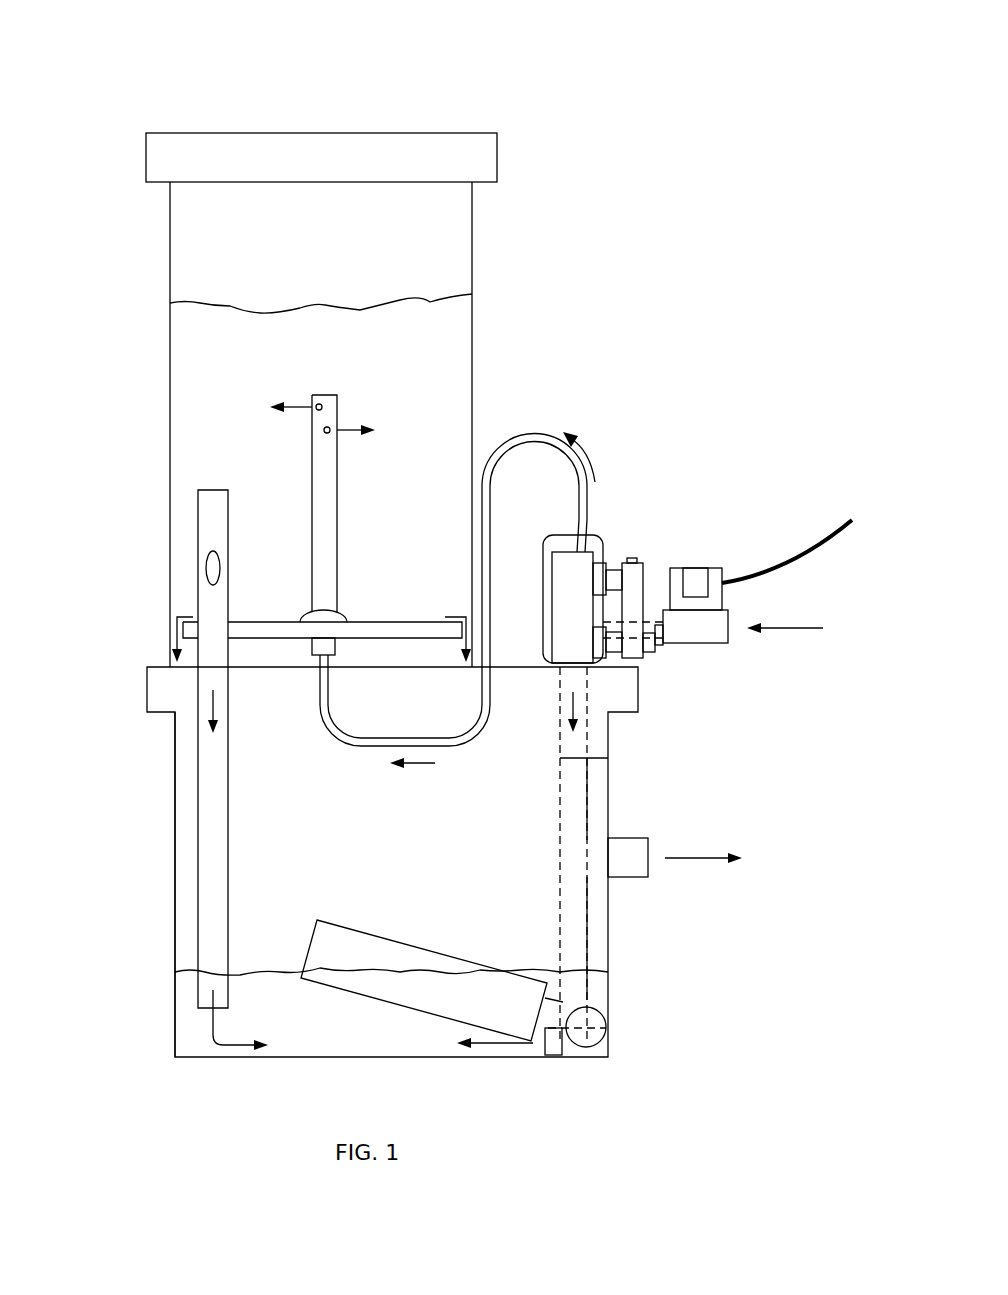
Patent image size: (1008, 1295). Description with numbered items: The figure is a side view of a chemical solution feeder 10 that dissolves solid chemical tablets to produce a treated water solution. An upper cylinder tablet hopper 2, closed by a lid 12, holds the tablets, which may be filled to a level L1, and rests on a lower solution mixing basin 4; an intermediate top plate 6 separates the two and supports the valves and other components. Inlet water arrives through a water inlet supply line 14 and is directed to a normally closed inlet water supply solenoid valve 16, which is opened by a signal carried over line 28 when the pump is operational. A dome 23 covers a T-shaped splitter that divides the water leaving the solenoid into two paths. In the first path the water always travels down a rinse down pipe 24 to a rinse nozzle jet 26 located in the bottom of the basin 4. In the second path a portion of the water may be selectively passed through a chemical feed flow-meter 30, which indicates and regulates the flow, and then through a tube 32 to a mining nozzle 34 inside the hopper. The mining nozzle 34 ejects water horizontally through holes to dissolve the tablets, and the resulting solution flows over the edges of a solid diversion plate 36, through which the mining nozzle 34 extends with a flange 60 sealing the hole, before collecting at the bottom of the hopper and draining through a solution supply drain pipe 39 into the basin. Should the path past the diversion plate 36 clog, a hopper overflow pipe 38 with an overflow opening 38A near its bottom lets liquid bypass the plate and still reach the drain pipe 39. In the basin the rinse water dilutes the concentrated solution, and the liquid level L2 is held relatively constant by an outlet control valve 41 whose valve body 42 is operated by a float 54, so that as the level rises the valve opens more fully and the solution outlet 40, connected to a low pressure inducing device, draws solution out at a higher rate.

The feeder 10 is at (503, 66).
The lid 12 is at (146, 150).
The tablet hopper 2 is at (472, 248).
The tablet level L1 is at (373, 303).
The mining nozzle 34 is at (320, 395).
The tube 32 is at (530, 432).
The hopper overflow pipe 38 is at (213, 513).
The overflow opening 38A is at (213, 567).
The flange 60 is at (302, 618).
The diversion plate 36 is at (403, 630).
The chemical feed flow-meter 30 is at (555, 592).
The dome 23 is at (603, 557).
The inlet water supply solenoid valve 16 is at (700, 568).
The line 28 is at (810, 545).
The water inlet supply line 14 is at (730, 620).
The intermediate top plate 6 is at (643, 667).
The solution mixing basin 4 is at (175, 1025).
The rinse down pipe 24 is at (572, 812).
The valve body 42 is at (600, 787).
The solution outlet 40 is at (648, 845).
The outlet control valve 41 is at (600, 930).
The solution supply drain pipe 39 is at (212, 838).
The float 54 is at (360, 945).
The solution level L2 is at (268, 970).
The rinse nozzle jet 26 is at (578, 1057).